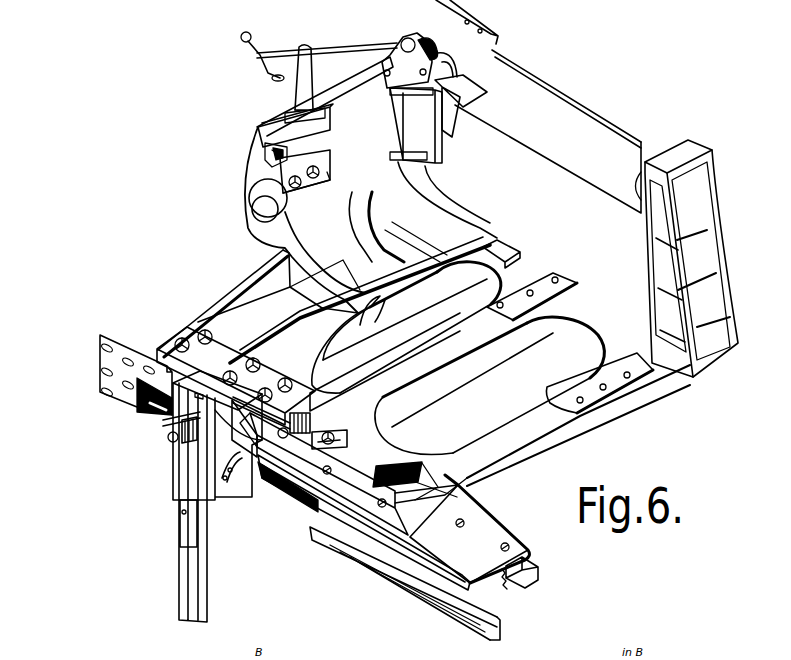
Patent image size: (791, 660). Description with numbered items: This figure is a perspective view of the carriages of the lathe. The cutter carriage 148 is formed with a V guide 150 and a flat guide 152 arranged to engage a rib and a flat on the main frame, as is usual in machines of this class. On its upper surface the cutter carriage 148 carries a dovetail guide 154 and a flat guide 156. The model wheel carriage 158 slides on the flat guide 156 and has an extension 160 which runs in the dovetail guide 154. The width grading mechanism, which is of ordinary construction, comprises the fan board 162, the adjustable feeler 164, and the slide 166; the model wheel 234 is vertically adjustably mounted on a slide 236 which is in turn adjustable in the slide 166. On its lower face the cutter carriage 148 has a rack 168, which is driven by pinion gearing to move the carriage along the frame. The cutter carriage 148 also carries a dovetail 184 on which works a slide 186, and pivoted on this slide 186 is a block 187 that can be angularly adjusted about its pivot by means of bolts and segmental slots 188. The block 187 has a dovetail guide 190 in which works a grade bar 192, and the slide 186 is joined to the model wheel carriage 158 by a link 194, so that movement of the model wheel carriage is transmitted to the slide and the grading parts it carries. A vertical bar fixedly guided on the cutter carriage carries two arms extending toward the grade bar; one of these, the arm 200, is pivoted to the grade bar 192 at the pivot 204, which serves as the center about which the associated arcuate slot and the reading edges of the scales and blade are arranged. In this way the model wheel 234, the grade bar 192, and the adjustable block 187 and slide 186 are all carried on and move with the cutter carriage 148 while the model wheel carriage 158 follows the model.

The cutter carriage 148 is at (501, 382).
The V guide 150 is at (470, 583).
The flat guide 152 is at (692, 397).
The dovetail guide 154 is at (440, 485).
The flat guide 156 is at (497, 247).
The model wheel carriage 158 is at (360, 300).
The extension 160 is at (348, 474).
The fan board 162 is at (538, 106).
The adjustable feeler 164 is at (447, 83).
The slide 166 is at (349, 125).
The rack 168 is at (538, 572).
The dovetail 184 is at (290, 503).
The slide 186 is at (257, 482).
The block 187 is at (226, 446).
The bolts and segmental slots 188 is at (230, 473).
The dovetail guide 190 is at (168, 352).
The grade bar 192 is at (200, 560).
The link 194 is at (287, 423).
The arm 200 is at (160, 413).
The pivot 204 is at (170, 432).
The model wheel 234 is at (250, 200).
The slide 236 is at (277, 158).